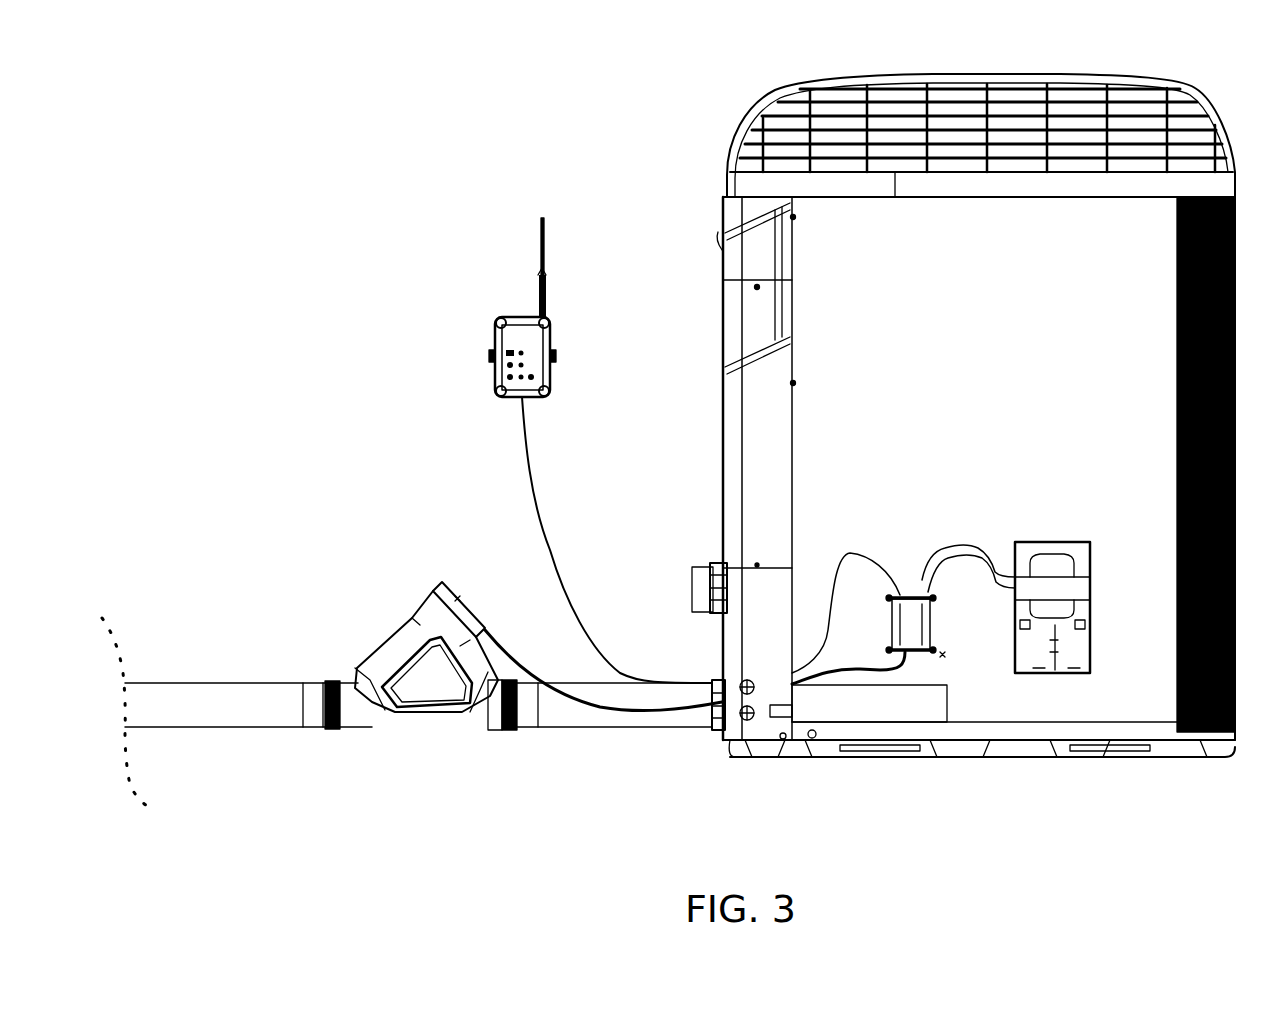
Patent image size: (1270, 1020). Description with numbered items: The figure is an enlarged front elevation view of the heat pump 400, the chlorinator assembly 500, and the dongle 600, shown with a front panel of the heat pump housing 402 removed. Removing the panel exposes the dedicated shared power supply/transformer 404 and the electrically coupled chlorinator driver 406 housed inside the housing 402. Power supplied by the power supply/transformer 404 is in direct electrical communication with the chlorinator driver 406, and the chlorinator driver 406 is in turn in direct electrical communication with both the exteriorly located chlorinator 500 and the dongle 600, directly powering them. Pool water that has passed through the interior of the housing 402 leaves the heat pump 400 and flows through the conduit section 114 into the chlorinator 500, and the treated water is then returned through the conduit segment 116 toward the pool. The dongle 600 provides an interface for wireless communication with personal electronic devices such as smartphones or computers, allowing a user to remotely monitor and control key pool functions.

The heat pump 400 is at (888, 45).
The housing 402 is at (757, 430).
The power supply/transformer 404 is at (1052, 532).
The chlorinator driver 406 is at (902, 592).
The chlorinator 500 is at (417, 580).
The dongle 600 is at (498, 298).
The conduit section 114 is at (628, 728).
The conduit segment 116 is at (255, 693).